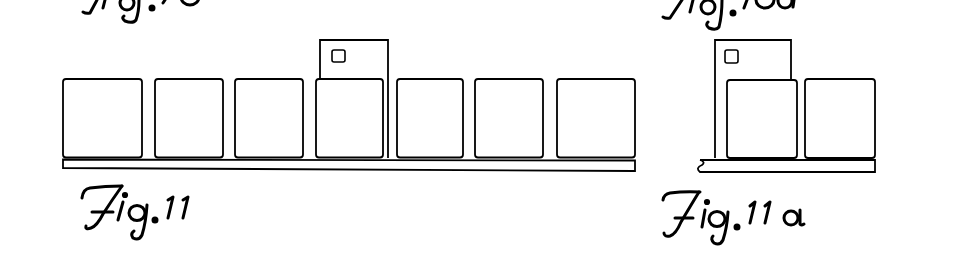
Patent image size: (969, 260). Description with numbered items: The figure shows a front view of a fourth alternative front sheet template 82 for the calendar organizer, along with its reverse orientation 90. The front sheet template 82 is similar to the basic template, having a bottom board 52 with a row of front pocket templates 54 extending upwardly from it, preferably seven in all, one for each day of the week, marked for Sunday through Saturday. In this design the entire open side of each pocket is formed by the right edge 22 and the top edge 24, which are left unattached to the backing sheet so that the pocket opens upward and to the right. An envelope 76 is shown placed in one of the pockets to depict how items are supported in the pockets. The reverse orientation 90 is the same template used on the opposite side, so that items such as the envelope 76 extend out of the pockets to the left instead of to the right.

In FIG. 11, the front sheet template 82 is at (55, 80).
In FIG. 11, the top edge 24 is at (90, 78).
In FIG. 11, the right edge 22 is at (147, 79).
In FIG. 11, the front pocket template 54 is at (261, 79).
In FIG. 11, the envelope 76 is at (386, 54).
In FIG. 11A, the envelope 76 is at (772, 48).
In FIG. 11, the bottom board 52 is at (465, 164).
In FIG. 11A, the reverse orientation 90 is at (852, 58).